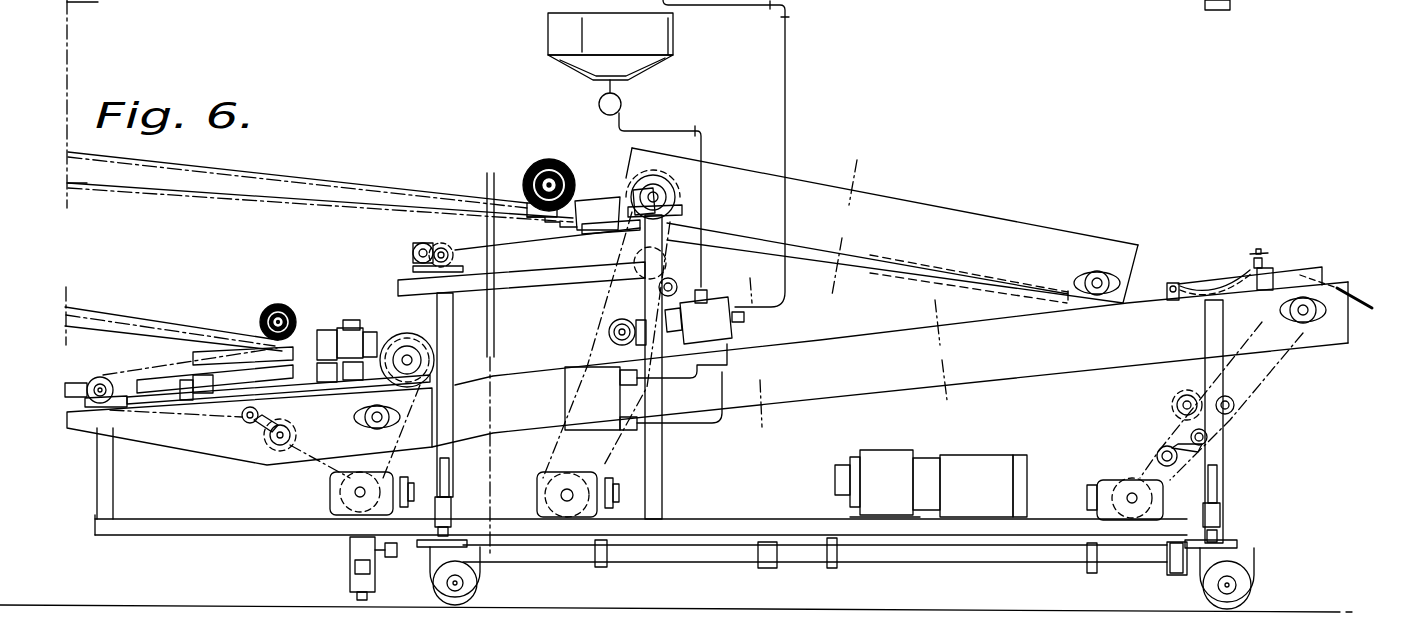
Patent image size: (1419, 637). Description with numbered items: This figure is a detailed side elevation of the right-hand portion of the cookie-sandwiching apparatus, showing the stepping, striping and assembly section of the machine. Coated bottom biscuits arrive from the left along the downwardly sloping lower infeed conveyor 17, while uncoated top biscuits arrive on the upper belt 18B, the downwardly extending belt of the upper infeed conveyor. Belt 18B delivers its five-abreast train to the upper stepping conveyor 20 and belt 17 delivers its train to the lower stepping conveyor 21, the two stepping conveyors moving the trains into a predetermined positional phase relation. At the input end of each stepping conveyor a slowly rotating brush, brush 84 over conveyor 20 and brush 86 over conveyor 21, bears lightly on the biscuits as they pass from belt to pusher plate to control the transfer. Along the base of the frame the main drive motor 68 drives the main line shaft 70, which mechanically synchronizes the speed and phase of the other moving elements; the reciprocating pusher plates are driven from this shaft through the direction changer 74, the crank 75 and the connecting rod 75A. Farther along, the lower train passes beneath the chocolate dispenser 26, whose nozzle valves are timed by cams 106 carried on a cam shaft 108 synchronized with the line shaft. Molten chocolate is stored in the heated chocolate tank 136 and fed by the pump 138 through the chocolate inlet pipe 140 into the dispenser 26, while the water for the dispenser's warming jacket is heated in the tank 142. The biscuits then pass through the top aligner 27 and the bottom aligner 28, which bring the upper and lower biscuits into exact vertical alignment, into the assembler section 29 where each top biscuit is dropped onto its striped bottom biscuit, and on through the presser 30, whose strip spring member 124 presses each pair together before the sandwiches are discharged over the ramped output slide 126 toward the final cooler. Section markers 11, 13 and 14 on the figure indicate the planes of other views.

The section line 11- 11 is at (965, 308).
The section line 13- 13 is at (850, 173).
The cookie coater 14 is at (767, 282).
The lower infeed conveyor 17 is at (172, 306).
The conveyor belt 18B is at (395, 160).
The upper stepping conveyor 20 is at (587, 197).
The lower stepping conveyor 21 is at (304, 328).
The chocolate dispenser 26 is at (733, 332).
The top aligner 27 is at (998, 204).
The bottom aligner 28 is at (917, 421).
The assembler section 29 is at (1183, 259).
The presser 30 is at (1200, 283).
The main drive motor 68 is at (985, 463).
The main line shaft 70 is at (700, 553).
The direction changer 74 is at (330, 492).
The crank 75 is at (93, 378).
The connecting rod 75A is at (160, 357).
The brush 84 is at (537, 172).
The brush 86 is at (257, 313).
The cams 106 is at (608, 332).
The cam shaft 108 is at (609, 339).
The strip spring member 124 is at (1187, 12).
The ramped output slide 126 is at (1360, 292).
The heated-chocolate tank 136 is at (550, 33).
The pump 138 is at (600, 98).
The chocolate inlet pipe 140 is at (690, 117).
The tank 142 is at (580, 398).